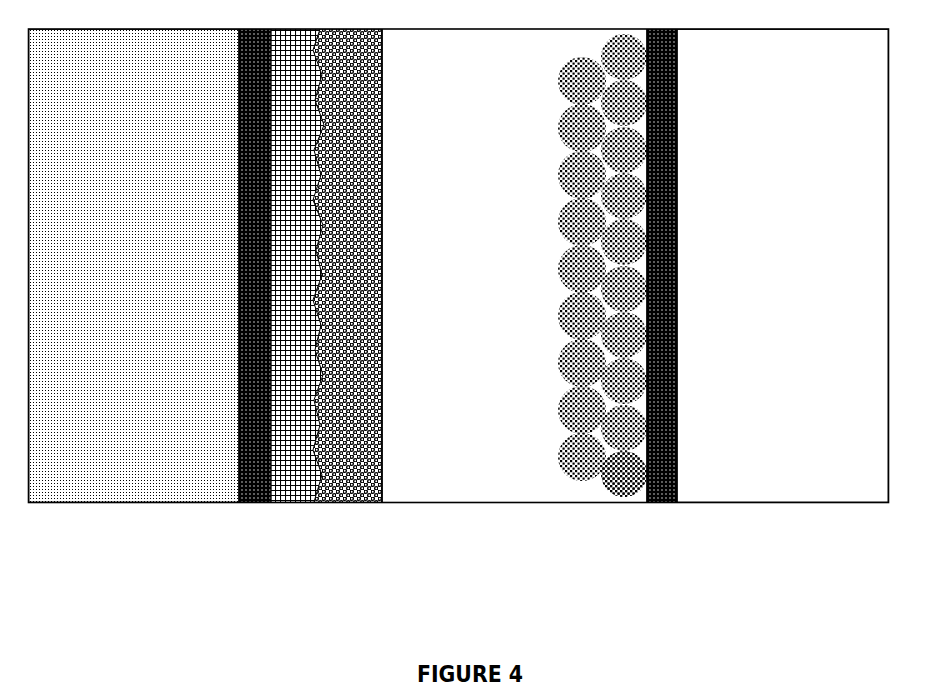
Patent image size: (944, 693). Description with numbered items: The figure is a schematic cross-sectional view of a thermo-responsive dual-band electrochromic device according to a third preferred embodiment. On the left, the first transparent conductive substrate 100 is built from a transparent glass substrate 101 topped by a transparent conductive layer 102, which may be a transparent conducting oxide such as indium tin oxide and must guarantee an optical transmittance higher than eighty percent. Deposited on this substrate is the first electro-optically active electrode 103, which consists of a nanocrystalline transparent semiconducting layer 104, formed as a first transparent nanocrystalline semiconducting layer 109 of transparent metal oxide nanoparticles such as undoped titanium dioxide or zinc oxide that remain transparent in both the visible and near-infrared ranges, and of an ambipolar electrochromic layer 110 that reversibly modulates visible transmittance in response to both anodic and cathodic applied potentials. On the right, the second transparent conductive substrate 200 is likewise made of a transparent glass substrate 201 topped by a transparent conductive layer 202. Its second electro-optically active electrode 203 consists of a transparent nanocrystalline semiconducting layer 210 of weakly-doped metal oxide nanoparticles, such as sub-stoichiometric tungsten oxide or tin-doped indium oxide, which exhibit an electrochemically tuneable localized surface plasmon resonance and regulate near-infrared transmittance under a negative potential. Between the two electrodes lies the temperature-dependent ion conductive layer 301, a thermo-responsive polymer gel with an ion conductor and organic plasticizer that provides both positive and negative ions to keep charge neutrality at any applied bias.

The first transparent conductive substrate 100 is at (239, 503).
The transparent glass substrate 101 is at (164, 430).
The transparent conductive layer 102 is at (267, 460).
The first electro-optically active electrode 103 is at (314, 503).
The nanocrystalline transparent semiconducting layer 104 is at (303, 467).
The first transparent nanocrystalline semiconducting layer 109 is at (313, 505).
The ambipolar electrochromic layer 110 is at (382, 503).
The second transparent conductive substrate 200 is at (678, 503).
The transparent glass substrate 201 is at (802, 430).
The transparent conductive layer 202 is at (684, 302).
The second electro-optically active electrode 203 is at (599, 470).
The transparent nanocrystalline semiconducting layer 210 is at (628, 483).
The temperature-dependent ion conductive layer 301 is at (455, 433).